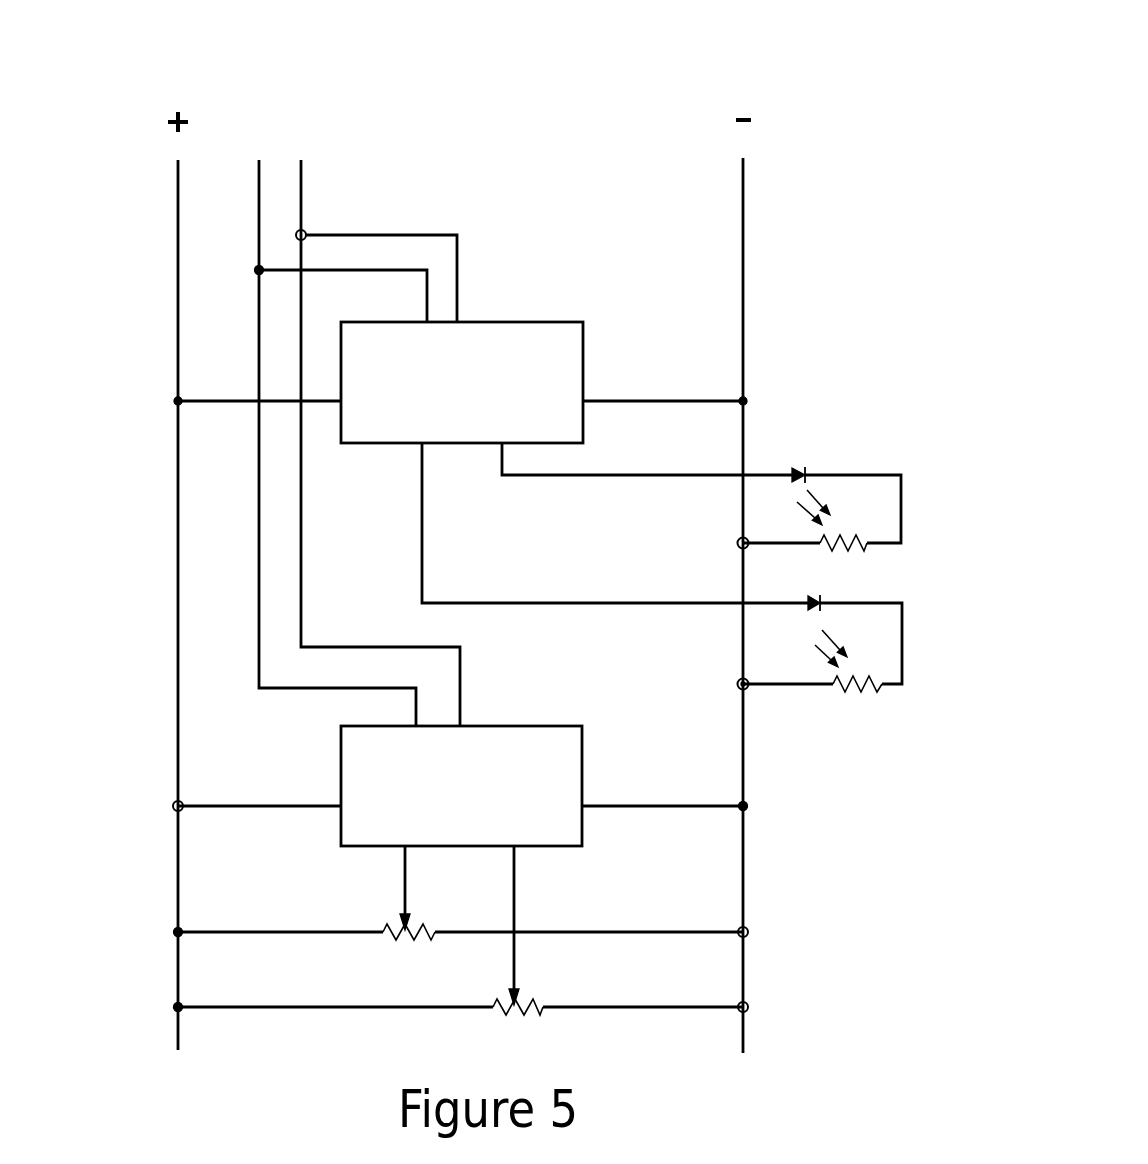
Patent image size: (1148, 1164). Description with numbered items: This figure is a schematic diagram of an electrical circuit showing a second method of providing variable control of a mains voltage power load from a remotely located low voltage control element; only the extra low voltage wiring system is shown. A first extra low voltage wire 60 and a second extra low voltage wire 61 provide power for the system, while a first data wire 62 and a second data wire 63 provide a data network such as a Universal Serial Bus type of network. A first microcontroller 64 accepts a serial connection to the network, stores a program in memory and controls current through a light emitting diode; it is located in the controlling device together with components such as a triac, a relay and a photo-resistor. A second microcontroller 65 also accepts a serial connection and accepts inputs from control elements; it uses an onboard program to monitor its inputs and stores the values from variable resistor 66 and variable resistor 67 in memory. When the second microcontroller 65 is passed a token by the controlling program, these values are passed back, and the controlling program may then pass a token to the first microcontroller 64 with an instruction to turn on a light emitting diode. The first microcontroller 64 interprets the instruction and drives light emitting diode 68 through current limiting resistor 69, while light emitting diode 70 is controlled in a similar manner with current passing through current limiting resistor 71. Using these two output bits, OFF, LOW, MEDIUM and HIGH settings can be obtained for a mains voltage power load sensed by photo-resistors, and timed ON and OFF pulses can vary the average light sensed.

The first extra low voltage wire 60 is at (167, 165).
The second extra low voltage wire 61 is at (748, 150).
The first data wire 62 is at (259, 145).
The second data wire 63 is at (301, 145).
The first microcontroller 64 is at (367, 367).
The second microcontroller 65 is at (353, 762).
The variable resistor 66 is at (380, 920).
The variable resistor 67 is at (487, 1005).
The light emitting diode 68 is at (782, 460).
The current limiting resistor 69 is at (840, 528).
The light emitting diode 70 is at (820, 592).
The current limiting resistor 71 is at (860, 668).